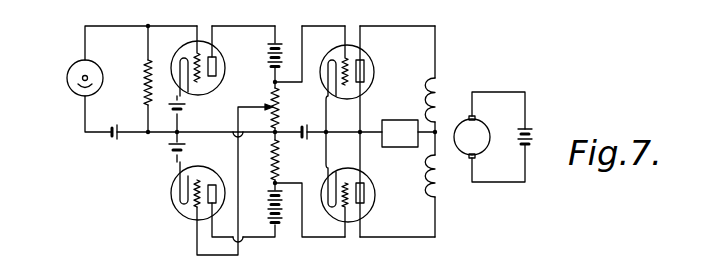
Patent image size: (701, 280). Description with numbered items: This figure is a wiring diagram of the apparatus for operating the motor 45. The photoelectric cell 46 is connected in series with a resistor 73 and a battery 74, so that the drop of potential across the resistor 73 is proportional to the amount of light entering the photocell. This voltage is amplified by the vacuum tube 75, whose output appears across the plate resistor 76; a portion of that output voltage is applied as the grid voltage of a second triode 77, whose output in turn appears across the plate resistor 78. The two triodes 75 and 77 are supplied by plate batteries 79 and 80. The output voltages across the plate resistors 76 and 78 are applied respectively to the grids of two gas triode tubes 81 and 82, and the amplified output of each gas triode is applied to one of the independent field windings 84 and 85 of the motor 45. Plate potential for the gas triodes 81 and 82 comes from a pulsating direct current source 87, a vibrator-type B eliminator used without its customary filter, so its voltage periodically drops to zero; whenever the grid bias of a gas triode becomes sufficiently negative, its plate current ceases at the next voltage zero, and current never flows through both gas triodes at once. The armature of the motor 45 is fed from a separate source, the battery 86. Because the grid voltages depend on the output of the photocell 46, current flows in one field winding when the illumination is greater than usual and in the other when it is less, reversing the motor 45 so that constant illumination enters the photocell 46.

The photoelectric cell 46 is at (67, 81).
The resistor 73 is at (145, 88).
The battery 74 is at (113, 139).
The vacuum tube 75 is at (225, 62).
The plate resistor 76 is at (282, 108).
The second triode 77 is at (172, 204).
The plate resistor 78 is at (281, 163).
The plate battery 79 is at (280, 52).
The plate battery 80 is at (283, 213).
The gas triode tube 81 is at (374, 64).
The gas triode tube 82 is at (373, 206).
The field winding 84 is at (450, 176).
The field winding 85 is at (444, 90).
The motor 45 is at (456, 101).
The battery 86 is at (533, 136).
The pulsating direct current source 87 is at (405, 148).